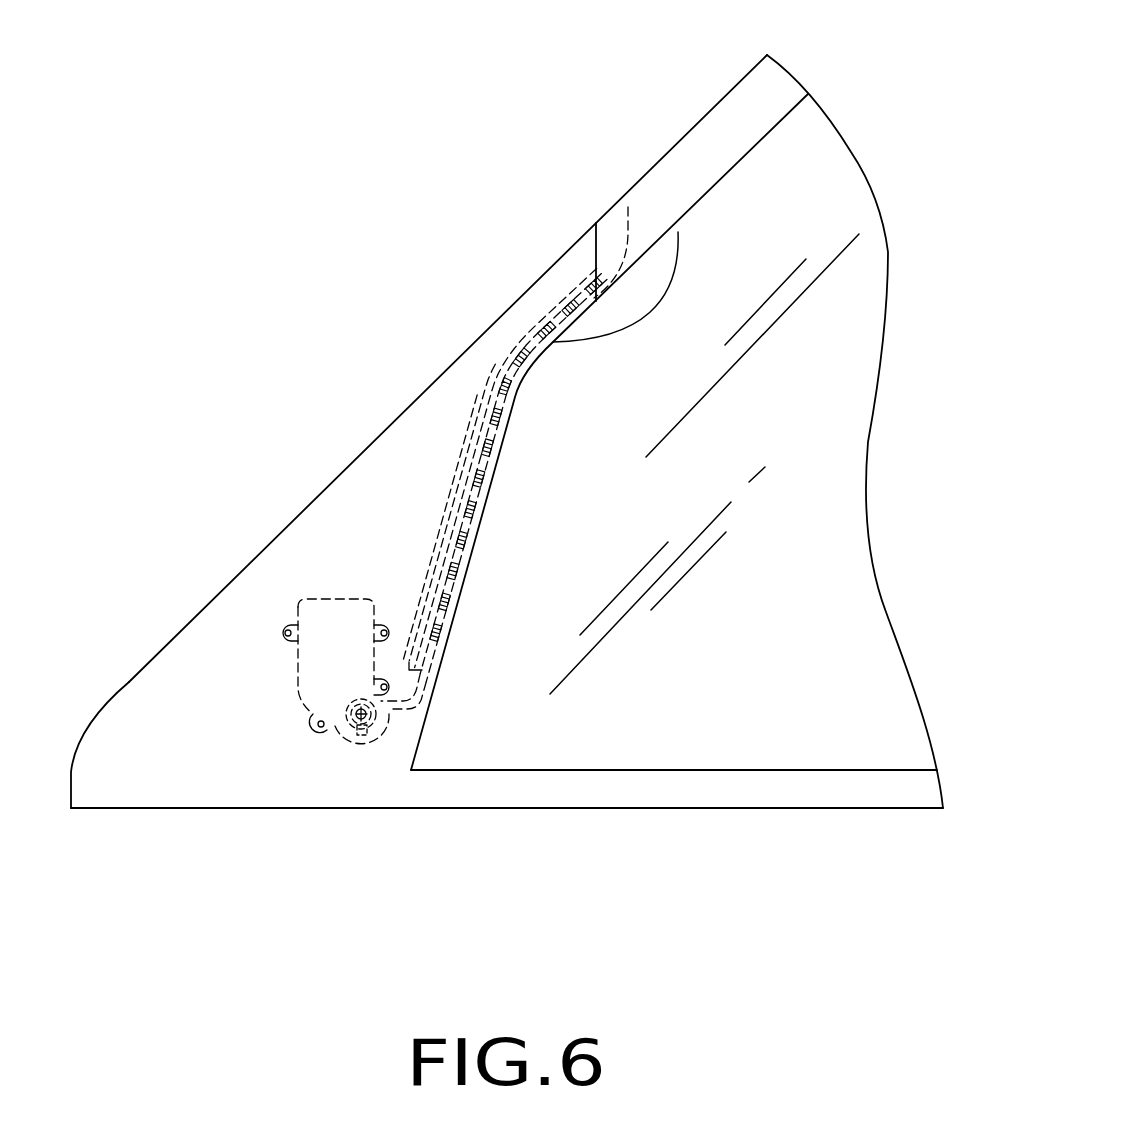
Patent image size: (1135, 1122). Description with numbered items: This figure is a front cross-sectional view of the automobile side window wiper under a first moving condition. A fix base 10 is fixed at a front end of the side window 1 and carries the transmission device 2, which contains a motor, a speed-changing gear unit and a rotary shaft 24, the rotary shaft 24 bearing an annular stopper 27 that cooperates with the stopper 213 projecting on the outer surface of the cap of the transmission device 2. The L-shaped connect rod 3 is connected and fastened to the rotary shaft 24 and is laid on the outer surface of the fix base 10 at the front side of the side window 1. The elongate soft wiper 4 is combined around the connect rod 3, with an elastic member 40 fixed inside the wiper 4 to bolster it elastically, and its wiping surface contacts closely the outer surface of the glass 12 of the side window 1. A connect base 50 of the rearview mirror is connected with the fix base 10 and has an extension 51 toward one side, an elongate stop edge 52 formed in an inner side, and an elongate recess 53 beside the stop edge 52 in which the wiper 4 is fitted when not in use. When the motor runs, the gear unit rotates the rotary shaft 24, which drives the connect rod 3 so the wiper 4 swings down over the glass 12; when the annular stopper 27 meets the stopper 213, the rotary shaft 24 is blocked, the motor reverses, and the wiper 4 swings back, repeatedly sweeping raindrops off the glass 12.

The side window 1 is at (503, 810).
The fix base 10 is at (218, 760).
The glass 12 is at (734, 683).
The transmission device 2 is at (270, 583).
The stopper 213 is at (340, 736).
The rotary shaft 24 is at (361, 735).
The annular stopper 27 is at (364, 700).
The connect rod 3 is at (402, 708).
The wiper 4 is at (496, 356).
The elastic member 40 is at (522, 342).
The connect base 50 is at (388, 424).
The extension 51 is at (677, 230).
The stop edge 52 is at (477, 393).
The recess 53 is at (627, 205).